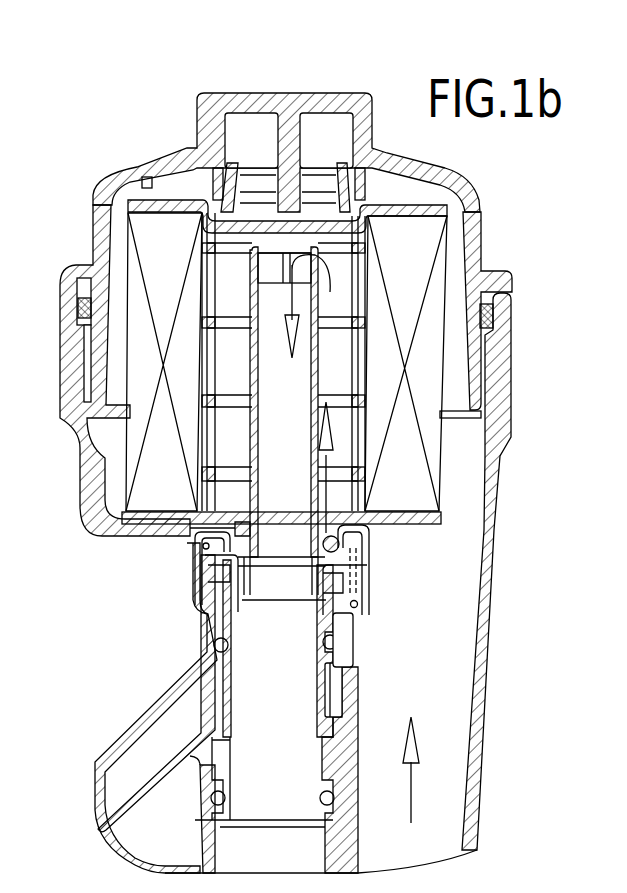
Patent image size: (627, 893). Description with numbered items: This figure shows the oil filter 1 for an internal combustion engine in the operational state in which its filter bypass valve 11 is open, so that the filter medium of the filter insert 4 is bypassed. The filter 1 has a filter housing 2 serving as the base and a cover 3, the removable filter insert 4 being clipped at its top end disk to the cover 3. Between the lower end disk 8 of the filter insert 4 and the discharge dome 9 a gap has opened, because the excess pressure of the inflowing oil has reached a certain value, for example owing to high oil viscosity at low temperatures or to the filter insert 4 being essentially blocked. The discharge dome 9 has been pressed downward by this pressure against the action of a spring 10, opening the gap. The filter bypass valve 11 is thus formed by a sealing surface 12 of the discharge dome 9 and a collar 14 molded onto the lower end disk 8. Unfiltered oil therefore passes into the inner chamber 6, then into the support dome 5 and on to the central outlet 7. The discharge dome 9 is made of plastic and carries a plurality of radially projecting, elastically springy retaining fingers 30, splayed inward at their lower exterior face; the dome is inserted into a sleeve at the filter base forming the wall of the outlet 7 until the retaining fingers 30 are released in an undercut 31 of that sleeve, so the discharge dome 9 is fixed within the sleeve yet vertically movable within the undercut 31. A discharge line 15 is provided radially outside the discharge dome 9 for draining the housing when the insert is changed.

The filter 1 is at (483, 173).
The filter housing 2 is at (500, 390).
The cover 3 is at (430, 187).
The filter insert 4 is at (420, 243).
The support dome 5 is at (363, 333).
The inner chamber 6 is at (295, 463).
The outlet 7 is at (290, 725).
The lower end disk 8 is at (410, 525).
The discharge dome 9 is at (343, 598).
The spring 10 is at (203, 575).
The filter bypass valve 11 is at (305, 562).
The sealing surface 12 is at (318, 555).
The collar 14 is at (197, 538).
The discharge line 15 is at (110, 782).
The retaining fingers 30 is at (337, 733).
The undercut 31 is at (333, 680).